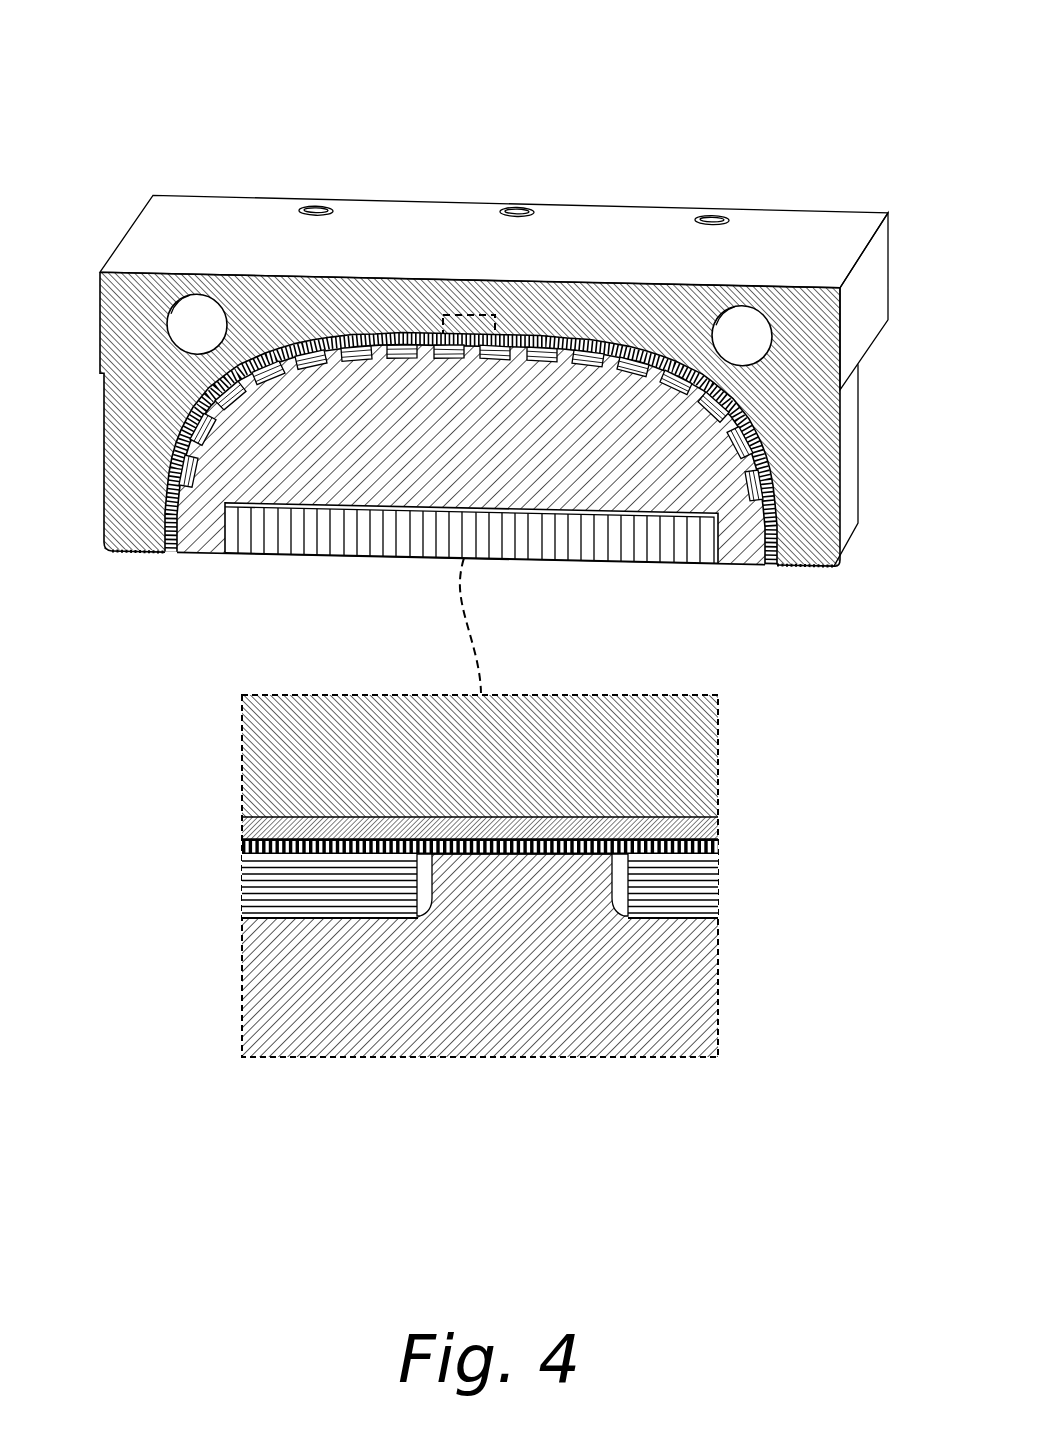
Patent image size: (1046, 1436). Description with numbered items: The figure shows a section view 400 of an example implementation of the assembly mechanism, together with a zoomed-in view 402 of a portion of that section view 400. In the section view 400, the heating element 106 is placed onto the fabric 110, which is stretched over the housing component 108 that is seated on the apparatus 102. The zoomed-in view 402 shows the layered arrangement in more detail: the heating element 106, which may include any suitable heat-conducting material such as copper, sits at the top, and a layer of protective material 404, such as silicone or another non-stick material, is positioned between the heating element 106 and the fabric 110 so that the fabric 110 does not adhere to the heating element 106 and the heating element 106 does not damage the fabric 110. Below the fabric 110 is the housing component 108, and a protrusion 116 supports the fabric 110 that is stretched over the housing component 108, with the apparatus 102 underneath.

The section view 400 is at (128, 48).
The zoomed-in view 402 is at (128, 672).
The apparatus 102 is at (627, 442).
The heating element 106 is at (123, 242).
The housing component 108 is at (542, 350).
The fabric 110 is at (403, 333).
The protrusion 116 is at (708, 853).
The layer of protective material 404 is at (242, 825).